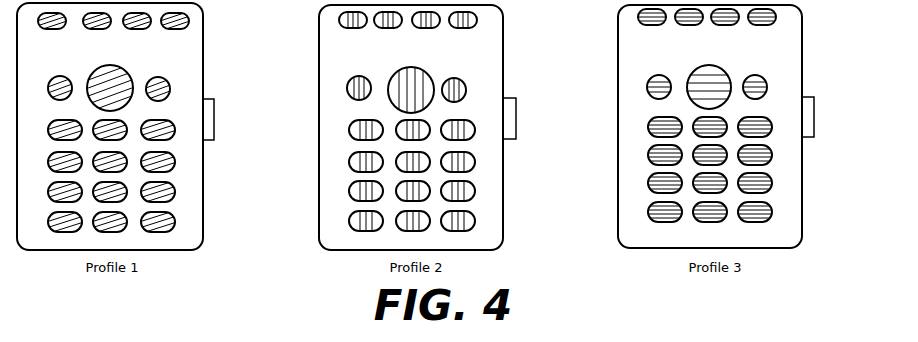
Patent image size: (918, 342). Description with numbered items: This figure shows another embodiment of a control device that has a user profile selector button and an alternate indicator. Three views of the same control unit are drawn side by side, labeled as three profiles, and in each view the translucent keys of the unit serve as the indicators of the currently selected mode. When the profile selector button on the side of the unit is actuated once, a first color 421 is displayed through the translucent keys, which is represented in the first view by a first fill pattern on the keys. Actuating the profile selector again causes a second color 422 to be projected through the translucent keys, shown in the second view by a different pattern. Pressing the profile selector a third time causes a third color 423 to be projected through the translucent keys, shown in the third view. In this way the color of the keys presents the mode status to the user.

The first color 421 is at (130, 82).
The second color 422 is at (406, 82).
The third color 423 is at (709, 90).